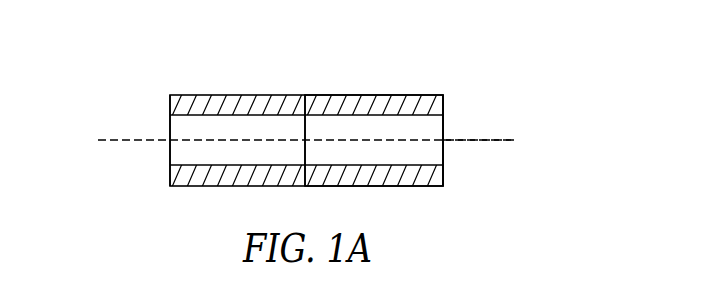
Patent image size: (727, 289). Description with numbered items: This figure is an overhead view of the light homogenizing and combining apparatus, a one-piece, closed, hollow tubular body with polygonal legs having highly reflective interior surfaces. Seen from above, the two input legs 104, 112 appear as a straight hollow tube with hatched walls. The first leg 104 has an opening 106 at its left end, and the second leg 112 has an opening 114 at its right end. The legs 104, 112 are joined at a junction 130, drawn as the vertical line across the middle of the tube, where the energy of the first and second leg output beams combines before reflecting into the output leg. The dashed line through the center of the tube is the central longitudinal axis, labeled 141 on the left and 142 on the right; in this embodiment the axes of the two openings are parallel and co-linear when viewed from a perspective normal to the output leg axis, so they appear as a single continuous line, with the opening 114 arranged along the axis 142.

The leg 104 is at (208, 95).
The opening 106 is at (169, 127).
The leg 112 is at (399, 95).
The opening 114 is at (443, 153).
The junction 130 is at (305, 130).
The central longitudinal axis (first portion) 141 is at (120, 142).
The central longitudinal axis 142 is at (490, 138).